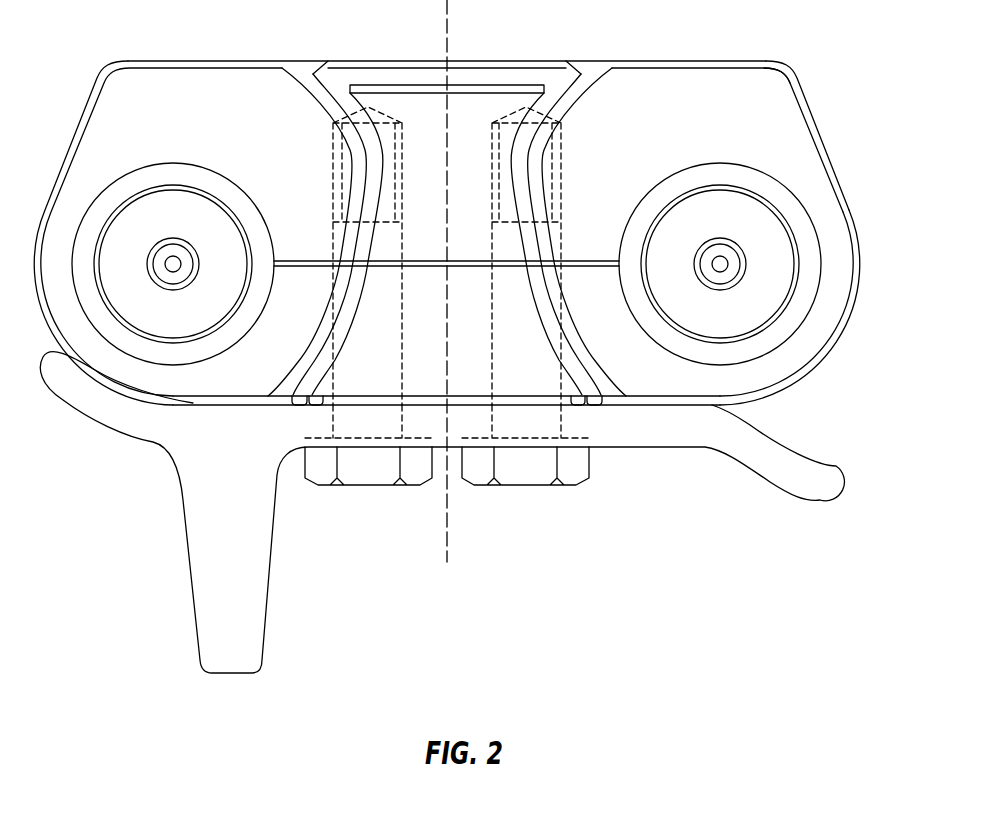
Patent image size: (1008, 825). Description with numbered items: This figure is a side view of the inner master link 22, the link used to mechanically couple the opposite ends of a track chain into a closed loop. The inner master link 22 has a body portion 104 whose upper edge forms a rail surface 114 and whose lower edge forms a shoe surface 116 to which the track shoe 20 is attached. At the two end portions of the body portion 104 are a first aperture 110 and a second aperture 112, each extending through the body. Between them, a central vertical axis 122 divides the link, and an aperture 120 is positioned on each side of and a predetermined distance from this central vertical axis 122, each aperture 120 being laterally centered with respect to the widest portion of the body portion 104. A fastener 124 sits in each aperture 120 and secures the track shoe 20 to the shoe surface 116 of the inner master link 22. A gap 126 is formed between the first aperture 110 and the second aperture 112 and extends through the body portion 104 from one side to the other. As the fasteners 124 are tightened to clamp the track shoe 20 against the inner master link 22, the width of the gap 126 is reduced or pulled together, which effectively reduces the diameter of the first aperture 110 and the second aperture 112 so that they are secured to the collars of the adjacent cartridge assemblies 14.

The cartridge assembly 14 is at (826, 290).
The track shoe 20 is at (183, 507).
The inner master link 22 is at (814, 115).
The body portion 104 is at (737, 80).
The first aperture 110 is at (190, 162).
The second aperture 112 is at (705, 163).
The rail surface 114 is at (637, 60).
The shoe surface 116 is at (437, 408).
The aperture 120 is at (333, 412).
The central vertical axis 122 is at (448, 36).
The fastener 124 is at (370, 486).
The gap 126 is at (320, 265).